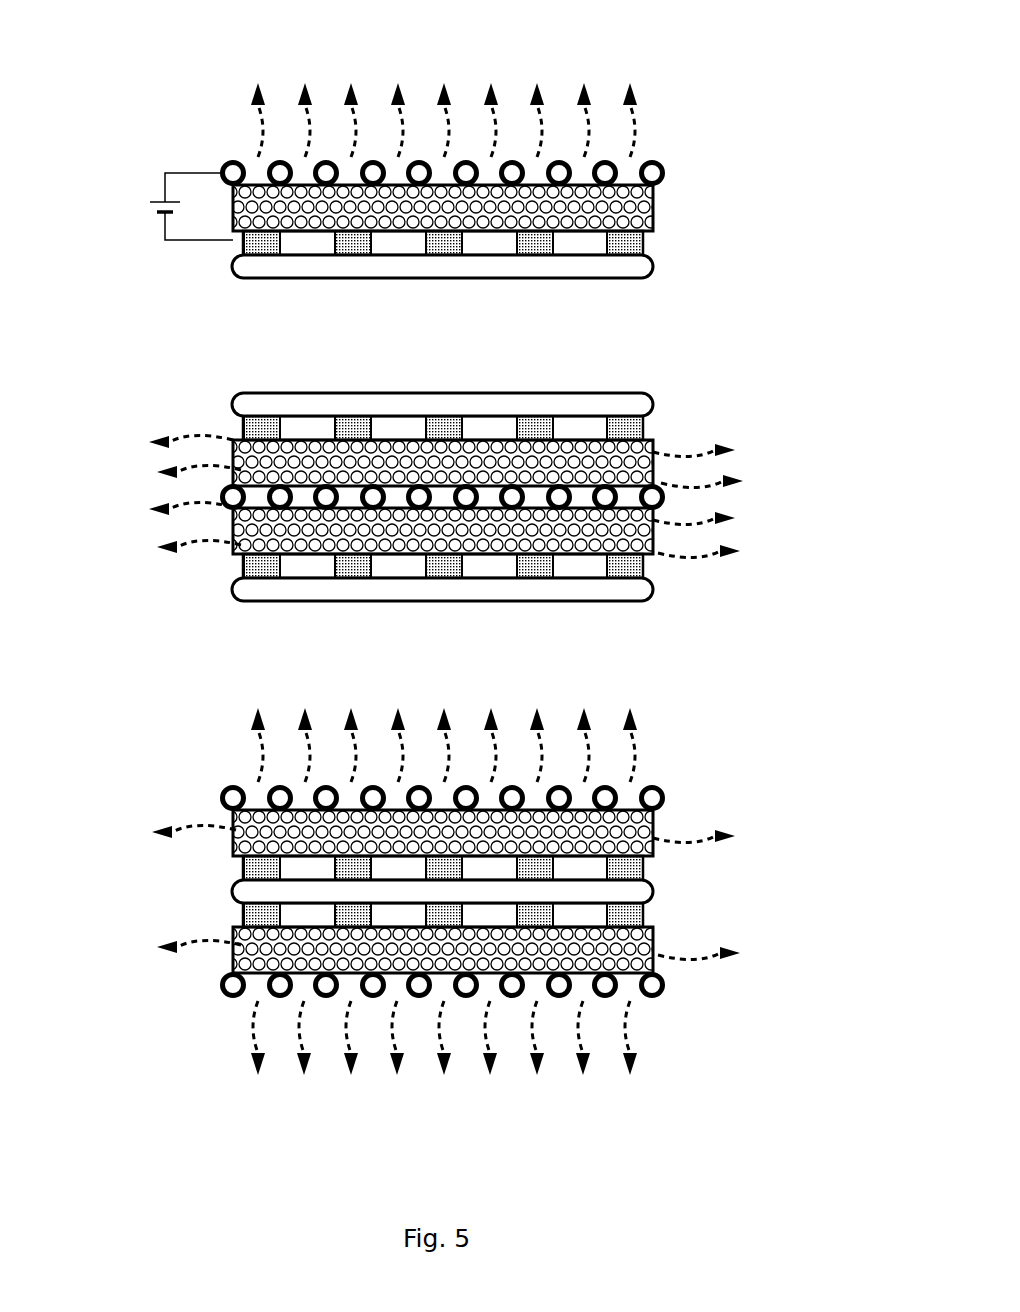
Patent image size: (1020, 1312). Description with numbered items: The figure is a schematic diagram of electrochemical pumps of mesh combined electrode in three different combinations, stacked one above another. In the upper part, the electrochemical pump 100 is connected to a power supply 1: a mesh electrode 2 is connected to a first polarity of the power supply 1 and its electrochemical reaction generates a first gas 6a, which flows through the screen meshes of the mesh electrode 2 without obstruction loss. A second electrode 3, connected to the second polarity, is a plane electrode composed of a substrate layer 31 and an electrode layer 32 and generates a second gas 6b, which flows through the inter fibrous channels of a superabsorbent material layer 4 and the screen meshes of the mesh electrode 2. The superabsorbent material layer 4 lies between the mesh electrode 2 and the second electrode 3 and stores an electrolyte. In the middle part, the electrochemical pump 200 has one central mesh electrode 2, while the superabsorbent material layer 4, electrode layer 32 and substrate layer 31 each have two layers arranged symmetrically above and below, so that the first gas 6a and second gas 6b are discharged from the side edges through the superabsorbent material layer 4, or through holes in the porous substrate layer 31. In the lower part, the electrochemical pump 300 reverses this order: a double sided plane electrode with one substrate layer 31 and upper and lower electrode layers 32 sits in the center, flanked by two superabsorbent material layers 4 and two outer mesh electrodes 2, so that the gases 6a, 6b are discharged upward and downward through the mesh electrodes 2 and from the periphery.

The electrochemical pump of mesh combined electrode 100 is at (628, 32).
The electrochemical pump of mesh combined electrode 200 is at (645, 345).
The electrochemical pump of mesh combined electrode 300 is at (645, 680).
The power supply 1 is at (133, 210).
The mesh electrode 2 is at (655, 173).
The second electrode 3 is at (660, 258).
The superabsorbent material layer 4 is at (655, 212).
The gas 6a is at (255, 125).
The gas 6b is at (458, 569).
The substrate layer 31 is at (232, 895).
The electrode layer 32 is at (650, 866).